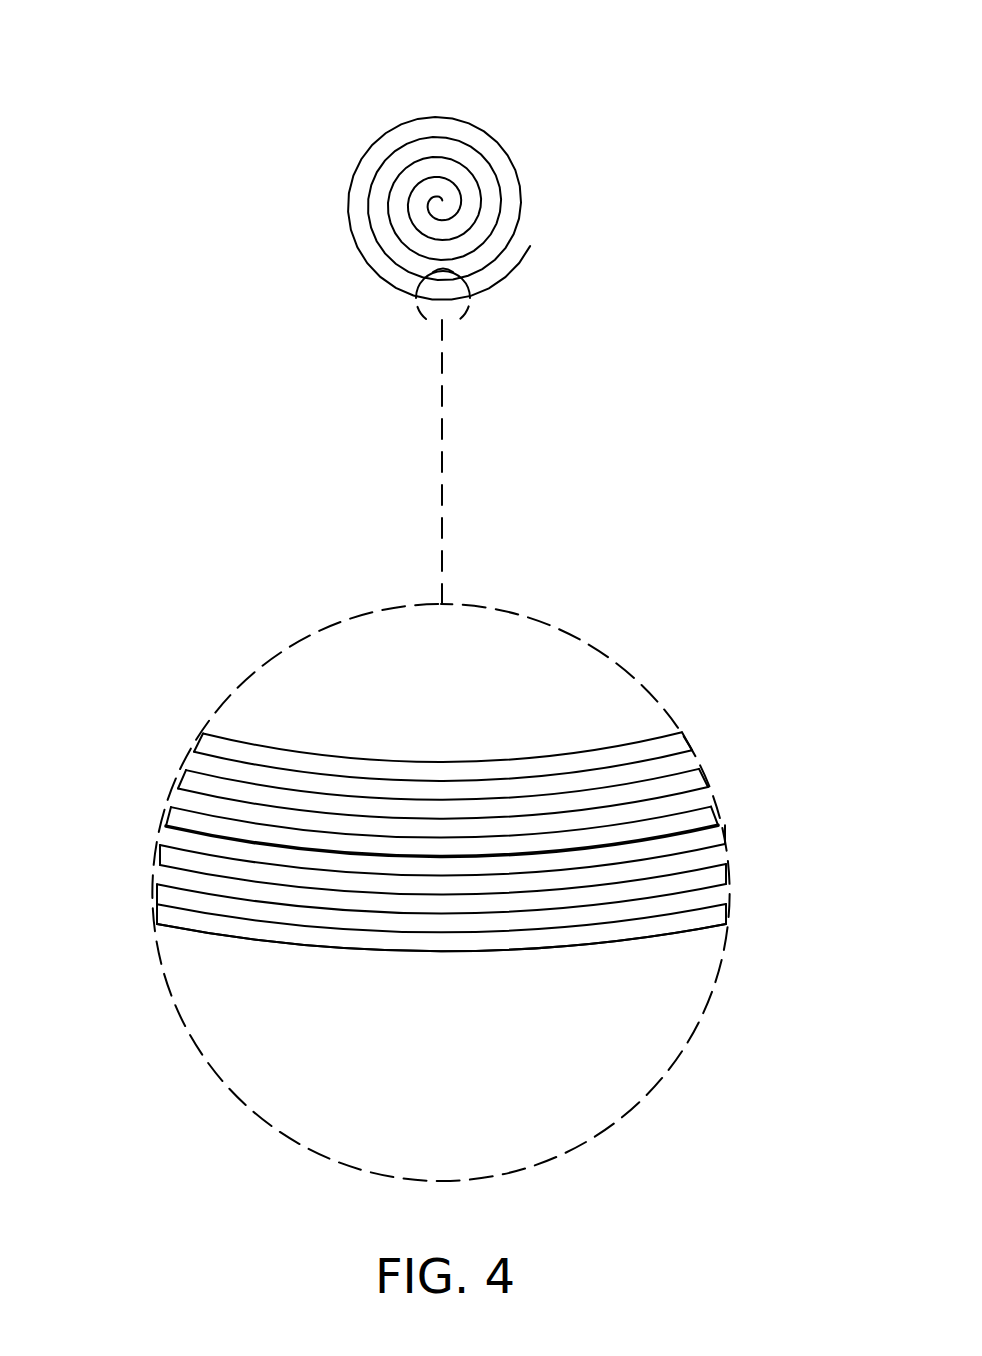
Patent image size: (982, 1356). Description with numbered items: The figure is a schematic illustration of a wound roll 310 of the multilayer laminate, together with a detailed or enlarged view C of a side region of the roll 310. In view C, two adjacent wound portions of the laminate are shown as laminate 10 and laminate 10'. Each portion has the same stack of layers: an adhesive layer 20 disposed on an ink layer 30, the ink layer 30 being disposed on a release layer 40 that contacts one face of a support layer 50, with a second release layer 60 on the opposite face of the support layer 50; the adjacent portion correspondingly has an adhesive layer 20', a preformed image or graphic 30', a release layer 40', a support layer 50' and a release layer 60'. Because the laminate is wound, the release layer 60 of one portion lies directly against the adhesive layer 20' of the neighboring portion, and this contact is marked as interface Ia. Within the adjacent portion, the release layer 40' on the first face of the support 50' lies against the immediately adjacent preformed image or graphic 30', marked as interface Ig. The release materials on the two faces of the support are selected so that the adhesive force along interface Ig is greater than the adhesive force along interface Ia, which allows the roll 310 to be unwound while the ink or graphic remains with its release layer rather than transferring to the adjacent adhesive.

The wound roll 310 is at (350, 98).
The view C is at (538, 624).
The multilayer laminate 10 is at (401, 770).
The adjacent portion of the laminate 10' is at (389, 869).
The adhesive layer 20 is at (444, 703).
The ink layer 30 is at (475, 748).
The release layer 40 is at (491, 768).
The support layer 50 is at (481, 793).
The release layer 60 is at (492, 814).
The adhesive layer 20' is at (477, 847).
The preformed image or graphic 30' is at (476, 880).
The release layer 40' is at (487, 901).
The support layer 50' is at (476, 923).
The release layer 60' is at (474, 936).
The interface a Ia is at (190, 830).
The interface g Ig is at (198, 868).